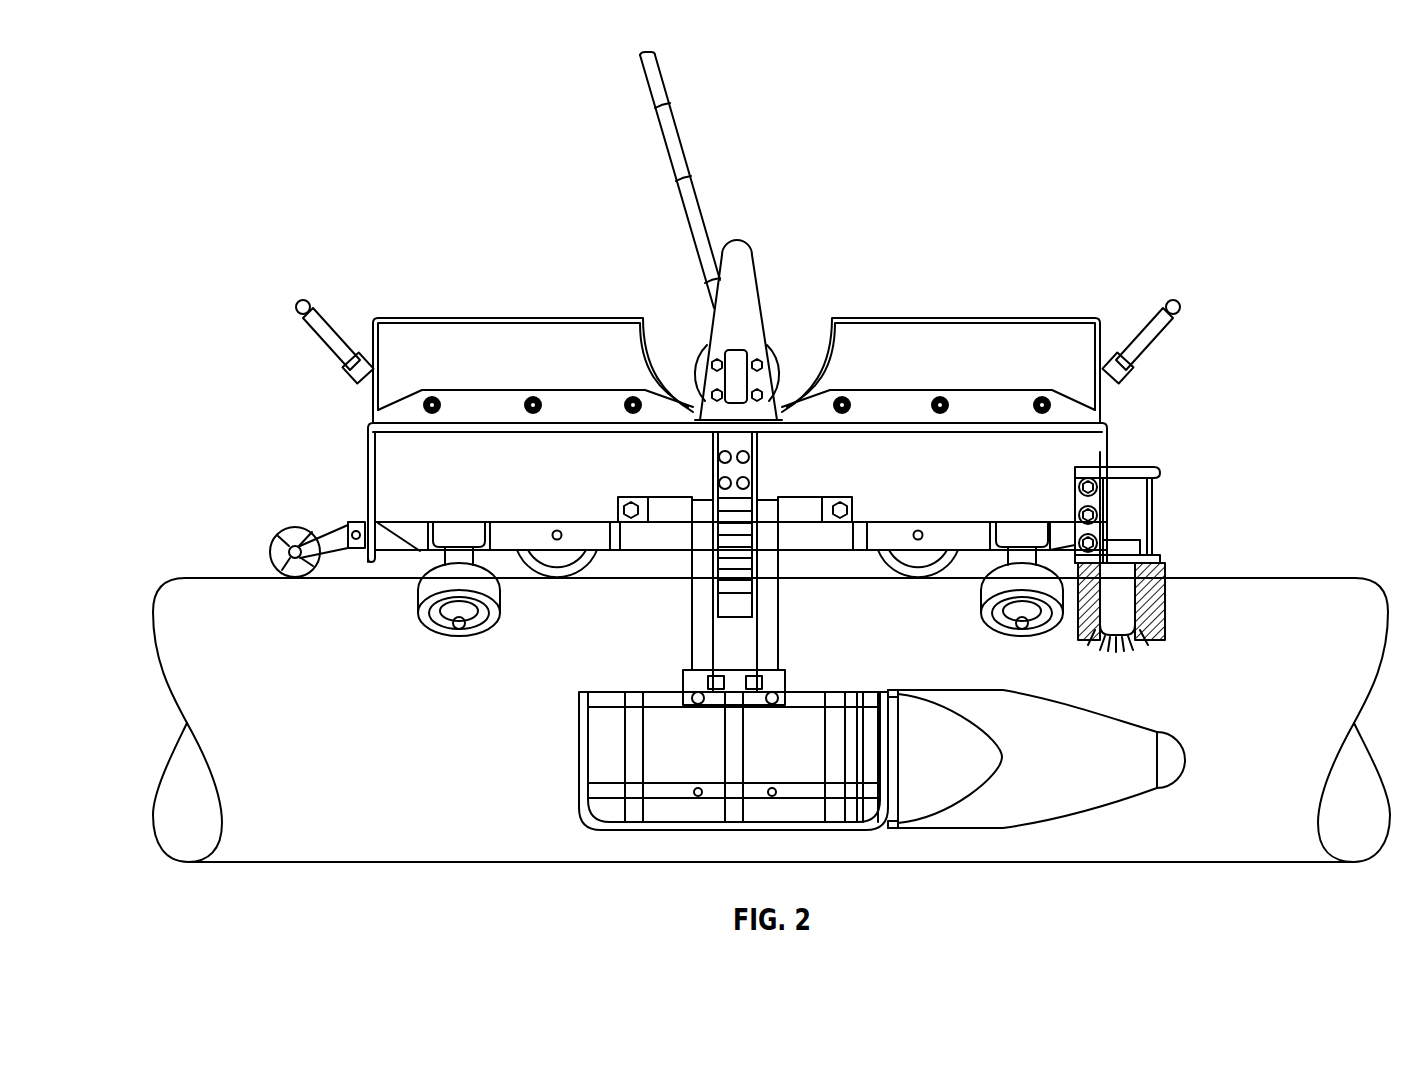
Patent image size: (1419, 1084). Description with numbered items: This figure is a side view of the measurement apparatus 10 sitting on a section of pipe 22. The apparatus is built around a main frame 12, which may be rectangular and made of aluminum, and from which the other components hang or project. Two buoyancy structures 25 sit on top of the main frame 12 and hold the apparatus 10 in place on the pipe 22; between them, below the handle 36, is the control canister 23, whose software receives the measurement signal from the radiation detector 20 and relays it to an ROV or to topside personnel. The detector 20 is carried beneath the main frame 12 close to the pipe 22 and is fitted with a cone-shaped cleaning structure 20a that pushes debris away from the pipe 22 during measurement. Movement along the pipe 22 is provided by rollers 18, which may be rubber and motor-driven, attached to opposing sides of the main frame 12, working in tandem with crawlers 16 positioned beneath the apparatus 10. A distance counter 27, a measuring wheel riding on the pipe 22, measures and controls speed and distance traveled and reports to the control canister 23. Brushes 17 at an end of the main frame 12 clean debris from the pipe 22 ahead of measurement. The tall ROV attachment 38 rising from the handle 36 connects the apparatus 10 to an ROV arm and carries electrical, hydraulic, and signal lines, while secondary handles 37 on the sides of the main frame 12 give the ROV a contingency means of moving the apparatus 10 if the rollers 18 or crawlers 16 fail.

The measurement apparatus 10 is at (1152, 131).
The main frame 12 is at (378, 478).
The crawlers 16 is at (580, 578).
The brushes 17 is at (1168, 575).
The roller 18 is at (432, 617).
The radiation detector 20 is at (785, 822).
The cleaning structure 20a is at (1045, 800).
The pipe 22 is at (234, 584).
The control canister 23 is at (768, 353).
The buoyancy structure 25 is at (515, 332).
The distance counter 27 is at (290, 535).
The handle 36 is at (747, 265).
The secondary handles 37 is at (298, 302).
The ROV attachment 38 is at (670, 130).